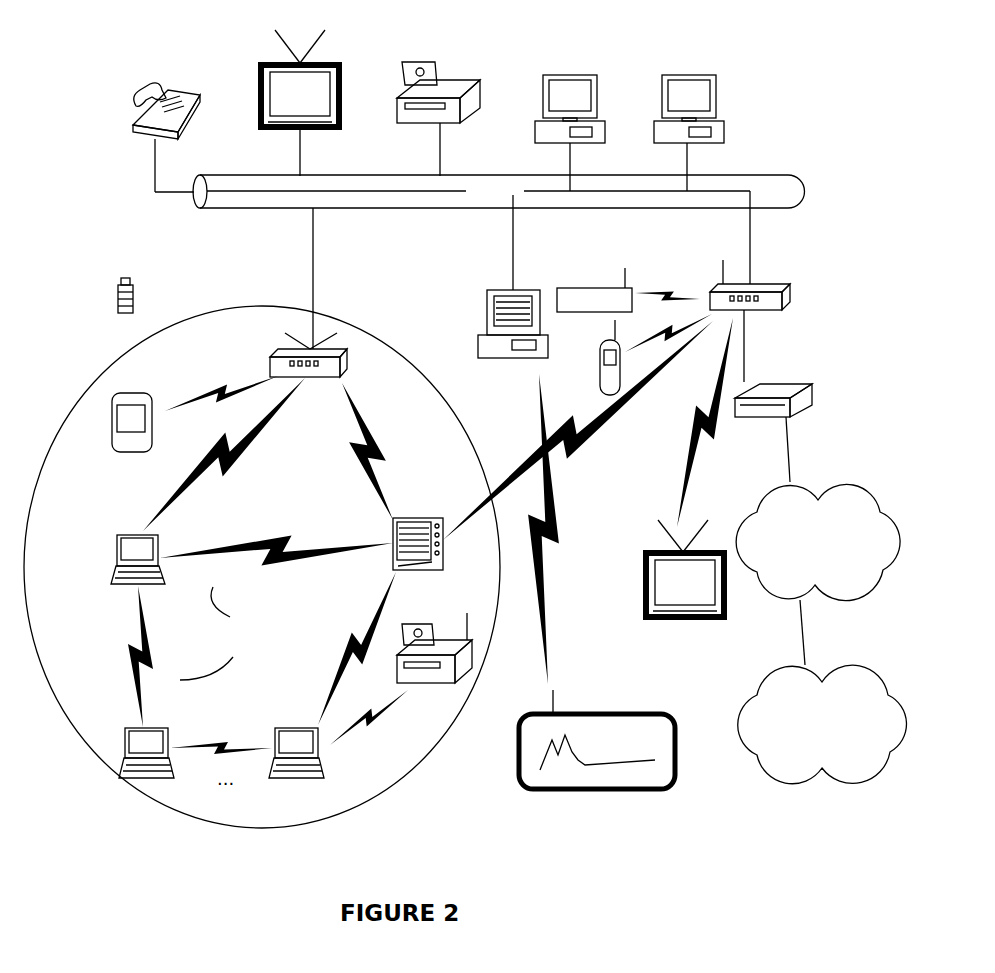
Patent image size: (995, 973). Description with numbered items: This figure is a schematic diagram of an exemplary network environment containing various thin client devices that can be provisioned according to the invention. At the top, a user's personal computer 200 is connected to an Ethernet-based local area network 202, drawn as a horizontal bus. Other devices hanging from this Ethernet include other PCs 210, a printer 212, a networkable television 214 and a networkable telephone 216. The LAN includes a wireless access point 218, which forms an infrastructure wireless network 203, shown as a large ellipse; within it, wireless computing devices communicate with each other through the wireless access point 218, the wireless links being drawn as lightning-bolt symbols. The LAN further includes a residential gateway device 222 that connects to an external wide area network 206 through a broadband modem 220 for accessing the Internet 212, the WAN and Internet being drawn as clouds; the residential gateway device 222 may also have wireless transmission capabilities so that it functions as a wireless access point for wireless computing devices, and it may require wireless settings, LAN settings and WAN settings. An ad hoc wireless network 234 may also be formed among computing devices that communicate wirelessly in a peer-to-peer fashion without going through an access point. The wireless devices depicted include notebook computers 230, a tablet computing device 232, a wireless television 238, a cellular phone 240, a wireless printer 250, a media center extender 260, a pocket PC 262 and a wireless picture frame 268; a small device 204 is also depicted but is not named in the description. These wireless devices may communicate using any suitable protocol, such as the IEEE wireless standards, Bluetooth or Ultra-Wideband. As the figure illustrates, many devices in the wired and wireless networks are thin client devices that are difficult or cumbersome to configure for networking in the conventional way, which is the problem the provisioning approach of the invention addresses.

The personal computer 200 is at (483, 315).
The Ethernet-based local area network 202 is at (805, 191).
The infrastructure wireless network 203 is at (270, 308).
The USB device 204 is at (113, 280).
The wide area network 206 is at (818, 574).
The other PCs 210 is at (660, 56).
The printer 212 is at (460, 60).
The networkable television 214 is at (275, 62).
The networkable telephone 216 is at (172, 77).
The wireless access point 218 is at (352, 360).
The broadband modem 220 is at (813, 389).
The residential gateway device 222 is at (778, 283).
The notebook computers 230 is at (130, 520).
The tablet computing device 232 is at (428, 520).
The ad hoc wireless network 234 is at (297, 673).
The wireless television 238 is at (666, 552).
The cellular phone 240 is at (600, 357).
The wireless printer 250 is at (460, 632).
The media center extender 260 is at (605, 287).
The pocket PC 262 is at (153, 414).
The wireless picture frame 268 is at (600, 792).